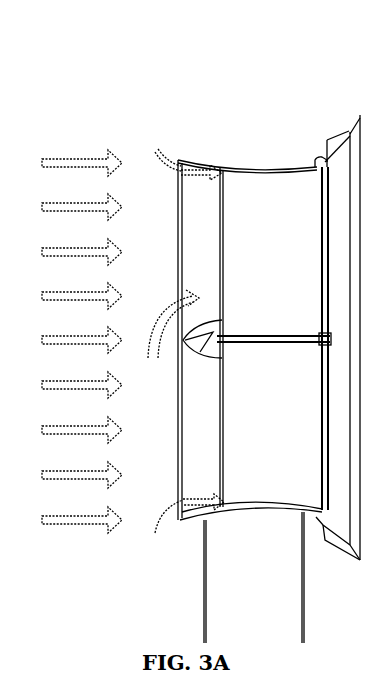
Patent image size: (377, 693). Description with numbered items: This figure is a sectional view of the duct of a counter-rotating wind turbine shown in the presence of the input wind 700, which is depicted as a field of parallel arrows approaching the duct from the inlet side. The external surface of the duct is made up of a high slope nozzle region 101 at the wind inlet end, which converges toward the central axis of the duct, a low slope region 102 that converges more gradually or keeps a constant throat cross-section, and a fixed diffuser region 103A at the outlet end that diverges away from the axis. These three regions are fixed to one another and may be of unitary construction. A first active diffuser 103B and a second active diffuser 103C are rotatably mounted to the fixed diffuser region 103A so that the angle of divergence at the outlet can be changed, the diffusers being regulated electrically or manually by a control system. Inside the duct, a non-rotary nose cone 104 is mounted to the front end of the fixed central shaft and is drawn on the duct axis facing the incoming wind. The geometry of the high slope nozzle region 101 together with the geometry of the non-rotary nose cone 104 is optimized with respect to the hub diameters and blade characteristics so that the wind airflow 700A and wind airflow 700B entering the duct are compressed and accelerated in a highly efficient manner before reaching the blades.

The input wind 700 is at (75, 157).
The wind airflow 700A is at (163, 307).
The wind airflow 700B is at (195, 183).
The high slope nozzle region of duct 101 is at (180, 160).
The low slope region of duct 102 is at (245, 165).
The fixed diffuser region 103A is at (322, 163).
The first active/fixed diffuser 103B is at (348, 133).
The second active/fixed diffuser 103C is at (360, 117).
The non-rotary nose cone of duct 104 is at (224, 338).